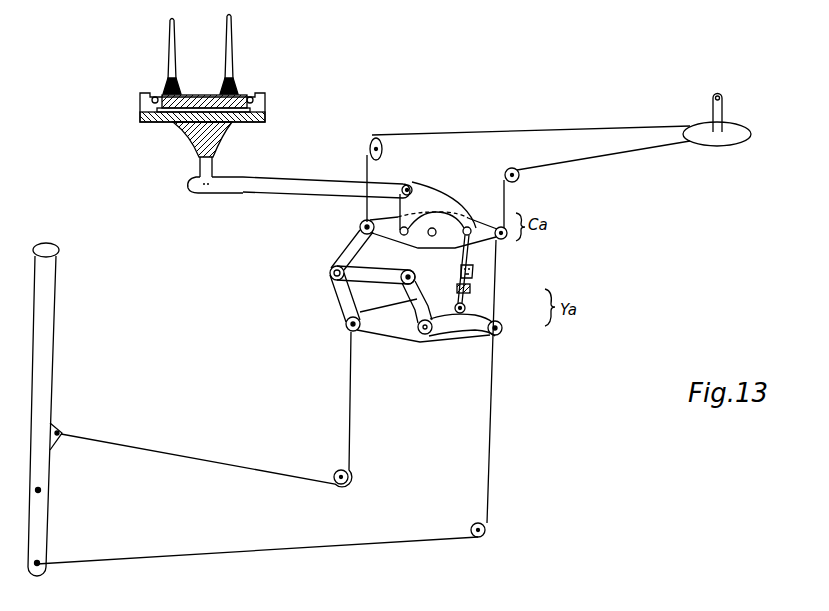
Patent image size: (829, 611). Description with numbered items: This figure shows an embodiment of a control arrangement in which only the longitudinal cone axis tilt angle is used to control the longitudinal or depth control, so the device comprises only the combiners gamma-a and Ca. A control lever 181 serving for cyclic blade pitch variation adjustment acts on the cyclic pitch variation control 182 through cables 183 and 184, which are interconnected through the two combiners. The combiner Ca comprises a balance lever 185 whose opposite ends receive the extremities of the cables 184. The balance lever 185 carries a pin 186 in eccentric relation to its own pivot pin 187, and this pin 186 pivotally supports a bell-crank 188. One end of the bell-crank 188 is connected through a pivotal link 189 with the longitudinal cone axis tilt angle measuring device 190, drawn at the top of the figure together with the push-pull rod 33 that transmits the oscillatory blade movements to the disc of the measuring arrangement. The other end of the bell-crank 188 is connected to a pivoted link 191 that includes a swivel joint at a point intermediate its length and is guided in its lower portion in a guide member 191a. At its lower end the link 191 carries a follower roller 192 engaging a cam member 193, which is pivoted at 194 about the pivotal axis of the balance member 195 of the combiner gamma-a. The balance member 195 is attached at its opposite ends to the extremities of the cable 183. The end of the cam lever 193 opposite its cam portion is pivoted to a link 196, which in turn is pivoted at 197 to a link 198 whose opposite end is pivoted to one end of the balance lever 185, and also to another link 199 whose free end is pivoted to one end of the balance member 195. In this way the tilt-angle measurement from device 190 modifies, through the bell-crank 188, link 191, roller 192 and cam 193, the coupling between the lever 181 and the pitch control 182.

The push-pull rod 33 is at (228, 44).
The longitudinal cone axis tilt angle measuring device 190 is at (208, 139).
The pivotal link 189 is at (292, 183).
The bell-crank 188 is at (430, 200).
The cables 184 is at (598, 155).
The cyclic pitch variation control 182 is at (720, 110).
The cable 183 is at (200, 556).
The control lever 181 is at (43, 330).
The balance lever 185 is at (482, 245).
The pin 186 is at (402, 235).
The pivot pin 187 is at (433, 237).
The link 198 is at (360, 238).
The pivot 197 is at (330, 272).
The link 196 is at (374, 281).
The link 199 is at (348, 308).
The cam member 193 is at (467, 322).
The pivot 194 is at (498, 333).
The balance member 195 is at (430, 336).
The follower roller 192 is at (464, 309).
The pivoted link 191 is at (473, 273).
The guide member 191a is at (457, 290).